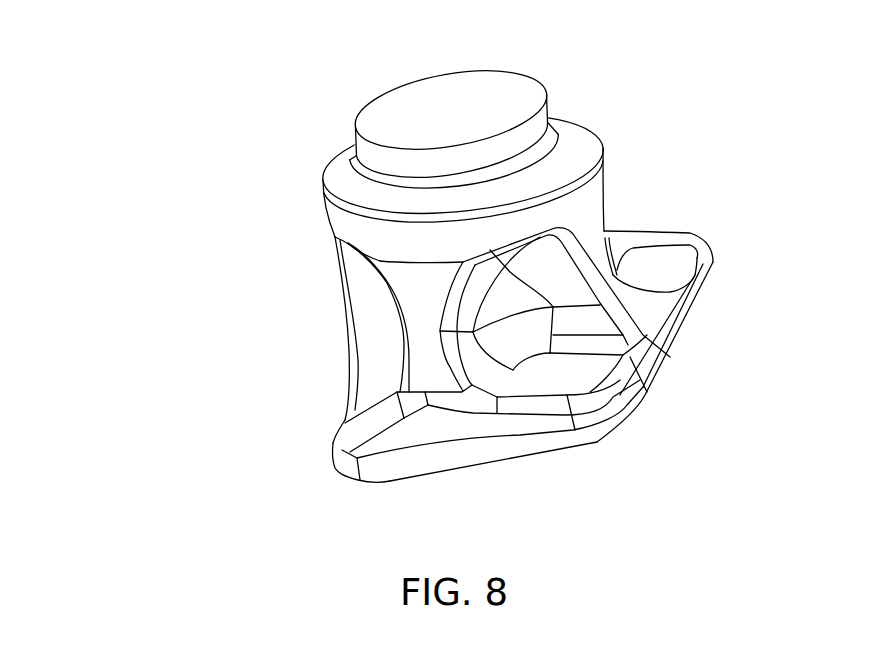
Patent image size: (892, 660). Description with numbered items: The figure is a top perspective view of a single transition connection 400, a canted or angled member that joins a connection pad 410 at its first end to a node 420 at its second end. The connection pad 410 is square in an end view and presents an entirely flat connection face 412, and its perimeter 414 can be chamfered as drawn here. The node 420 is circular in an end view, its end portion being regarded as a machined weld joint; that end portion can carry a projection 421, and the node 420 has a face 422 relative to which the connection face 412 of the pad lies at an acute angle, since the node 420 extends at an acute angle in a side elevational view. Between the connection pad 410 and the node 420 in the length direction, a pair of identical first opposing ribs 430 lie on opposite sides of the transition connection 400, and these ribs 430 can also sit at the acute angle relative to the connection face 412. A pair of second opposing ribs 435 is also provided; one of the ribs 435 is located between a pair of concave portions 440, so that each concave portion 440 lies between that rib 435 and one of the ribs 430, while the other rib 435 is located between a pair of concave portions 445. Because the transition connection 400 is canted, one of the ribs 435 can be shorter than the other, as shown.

The transition connection 400 is at (205, 157).
The connection pad 410 is at (418, 460).
The connection face 412 is at (533, 453).
The perimeter 414 is at (490, 463).
The node 420 is at (590, 160).
The projection 421 is at (550, 122).
The face 422 is at (447, 88).
The ribs 430 is at (415, 345).
The ribs 435 is at (338, 277).
The concave portions 440 is at (623, 237).
The concave portions 445 is at (367, 386).